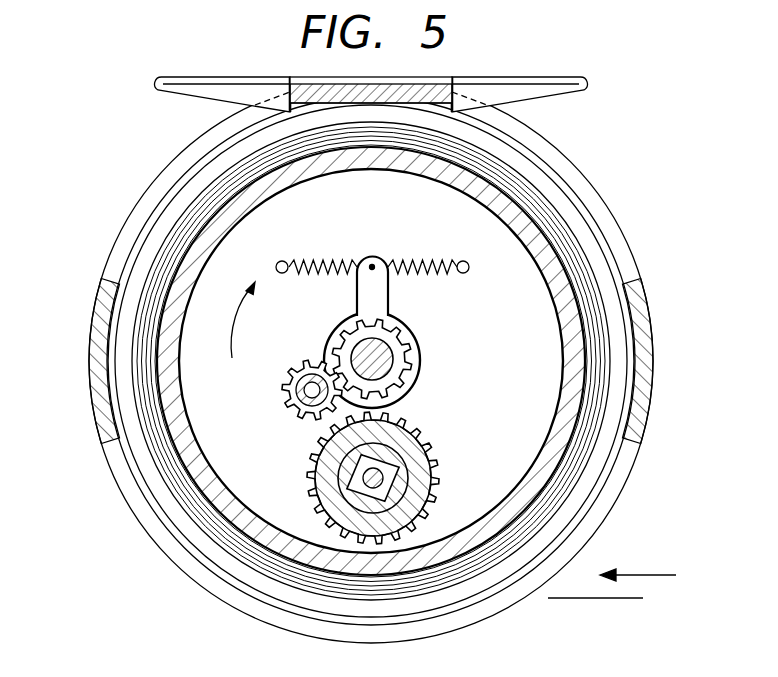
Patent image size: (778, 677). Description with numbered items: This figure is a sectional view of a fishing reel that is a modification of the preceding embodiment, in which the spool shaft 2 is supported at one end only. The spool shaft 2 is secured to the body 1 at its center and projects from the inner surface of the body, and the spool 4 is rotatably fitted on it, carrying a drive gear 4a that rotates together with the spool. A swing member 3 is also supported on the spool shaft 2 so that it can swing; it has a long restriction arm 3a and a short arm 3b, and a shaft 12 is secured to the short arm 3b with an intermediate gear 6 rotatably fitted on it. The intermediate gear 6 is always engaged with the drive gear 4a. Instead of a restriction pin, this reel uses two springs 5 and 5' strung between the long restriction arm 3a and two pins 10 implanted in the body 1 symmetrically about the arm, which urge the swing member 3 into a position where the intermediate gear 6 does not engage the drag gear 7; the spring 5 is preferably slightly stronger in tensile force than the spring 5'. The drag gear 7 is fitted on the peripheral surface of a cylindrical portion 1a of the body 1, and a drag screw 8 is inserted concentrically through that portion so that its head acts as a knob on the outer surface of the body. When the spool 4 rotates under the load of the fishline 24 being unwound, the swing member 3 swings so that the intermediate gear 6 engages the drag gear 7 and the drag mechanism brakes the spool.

The body 1 is at (166, 160).
The cylindrical portion 1a is at (400, 468).
The spool shaft 2 is at (384, 371).
The swing member 3 is at (425, 342).
The long restriction arm 3a is at (386, 256).
The short arm 3b is at (292, 388).
The spool 4 is at (562, 170).
The drive gear 4a is at (418, 357).
The spring 5 is at (532, 237).
The spring 5' is at (228, 222).
The intermediate gear 6 is at (296, 406).
The drag gear 7 is at (440, 460).
The drag screw 8 is at (392, 479).
The pin 10 is at (276, 264).
The shaft 12 is at (290, 398).
The fishline 24 is at (630, 598).